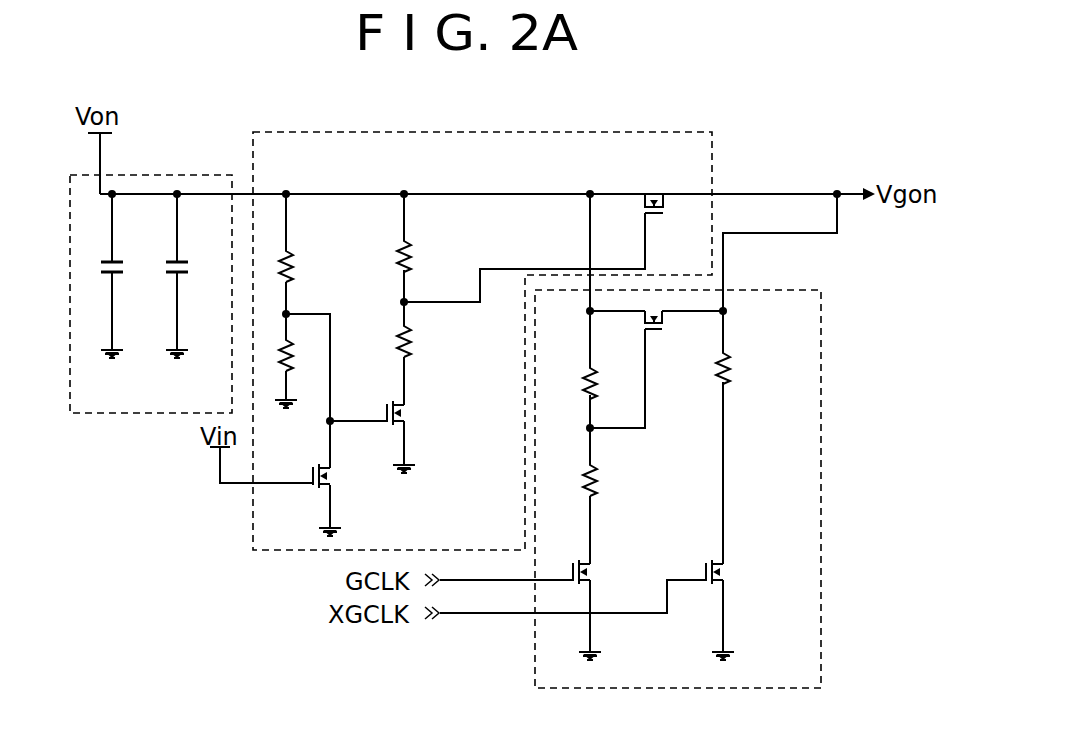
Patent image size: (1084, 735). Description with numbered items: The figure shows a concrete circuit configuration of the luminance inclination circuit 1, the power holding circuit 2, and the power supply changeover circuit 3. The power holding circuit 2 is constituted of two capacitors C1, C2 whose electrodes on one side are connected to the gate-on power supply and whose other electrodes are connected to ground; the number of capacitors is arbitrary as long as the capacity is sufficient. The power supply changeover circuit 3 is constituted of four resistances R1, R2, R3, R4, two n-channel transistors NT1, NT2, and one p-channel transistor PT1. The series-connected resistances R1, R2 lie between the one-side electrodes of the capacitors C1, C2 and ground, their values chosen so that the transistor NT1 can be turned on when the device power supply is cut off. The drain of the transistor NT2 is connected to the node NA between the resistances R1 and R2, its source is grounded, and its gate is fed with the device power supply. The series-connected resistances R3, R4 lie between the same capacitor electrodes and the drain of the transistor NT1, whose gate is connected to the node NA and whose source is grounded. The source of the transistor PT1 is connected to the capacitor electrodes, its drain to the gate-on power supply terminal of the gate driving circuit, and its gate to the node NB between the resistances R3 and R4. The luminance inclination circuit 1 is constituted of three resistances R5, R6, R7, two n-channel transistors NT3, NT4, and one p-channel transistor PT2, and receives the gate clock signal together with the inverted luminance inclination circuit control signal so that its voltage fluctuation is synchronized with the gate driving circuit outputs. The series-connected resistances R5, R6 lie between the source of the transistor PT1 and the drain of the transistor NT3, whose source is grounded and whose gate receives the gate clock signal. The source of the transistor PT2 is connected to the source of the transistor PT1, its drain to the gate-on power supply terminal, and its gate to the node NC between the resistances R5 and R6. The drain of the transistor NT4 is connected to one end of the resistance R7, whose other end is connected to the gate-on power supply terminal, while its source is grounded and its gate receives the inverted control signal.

The luminance inclination circuit 1 is at (825, 484).
The power holding circuit 2 is at (145, 177).
The power supply changeover circuit 3 is at (520, 129).
The capacitor C1 is at (119, 258).
The capacitor C2 is at (183, 258).
The resistance R1 is at (297, 268).
The resistance R2 is at (281, 360).
The resistance R3 is at (409, 247).
The resistance R4 is at (412, 340).
The resistance R5 is at (597, 378).
The resistance R6 is at (600, 481).
The resistance R7 is at (731, 369).
The node NA is at (336, 414).
The node NB is at (412, 296).
The node NC is at (597, 432).
The n-channel transistor NT1 is at (412, 411).
The n-channel transistor NT2 is at (338, 478).
The n-channel transistor NT3 is at (599, 565).
The n-channel transistor NT4 is at (731, 563).
The p-channel transistor PT1 is at (651, 188).
The p-channel transistor PT2 is at (659, 336).